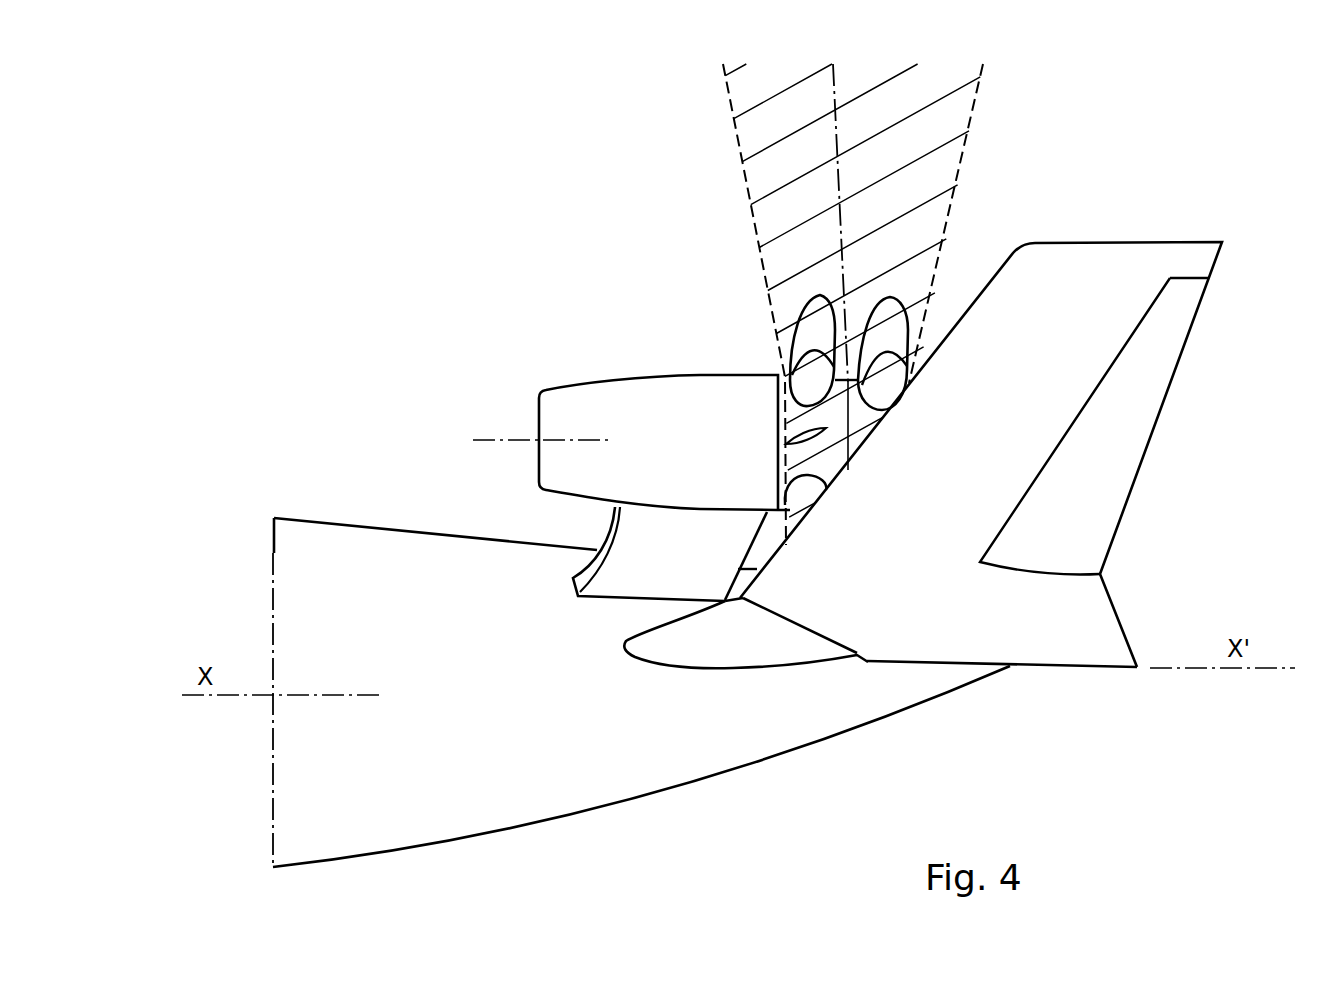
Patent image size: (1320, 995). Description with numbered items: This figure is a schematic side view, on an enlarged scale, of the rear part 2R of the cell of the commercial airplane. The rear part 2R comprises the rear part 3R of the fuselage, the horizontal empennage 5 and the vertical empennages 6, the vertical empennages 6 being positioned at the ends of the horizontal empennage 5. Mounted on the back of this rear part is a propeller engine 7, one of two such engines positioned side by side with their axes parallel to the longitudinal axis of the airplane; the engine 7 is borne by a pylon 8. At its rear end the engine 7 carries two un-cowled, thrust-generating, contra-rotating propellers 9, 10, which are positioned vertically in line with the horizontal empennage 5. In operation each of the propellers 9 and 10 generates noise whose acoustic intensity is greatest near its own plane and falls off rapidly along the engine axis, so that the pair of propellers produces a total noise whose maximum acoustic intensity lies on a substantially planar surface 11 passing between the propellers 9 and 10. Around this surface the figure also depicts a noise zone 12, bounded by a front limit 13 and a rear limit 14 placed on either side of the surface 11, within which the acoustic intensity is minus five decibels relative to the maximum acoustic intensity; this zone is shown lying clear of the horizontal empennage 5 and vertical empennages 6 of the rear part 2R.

The rear part of the cell 2R is at (994, 238).
The rear part of the fuselage 3R is at (562, 755).
The horizontal empennage 5 is at (770, 643).
The vertical empennage 6 is at (1000, 398).
The propeller engine 7 is at (640, 398).
The pylon 8 is at (640, 553).
The propeller 9 is at (807, 337).
The propeller 10 is at (878, 340).
The surface of maximum acoustic intensity 11 is at (837, 188).
The noise zone 12 is at (812, 245).
The front limit 13 is at (733, 118).
The rear limit 14 is at (967, 127).